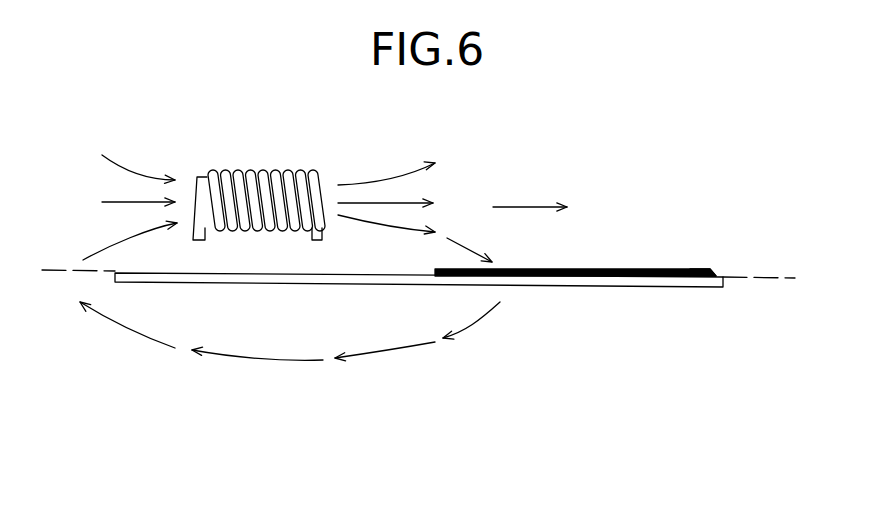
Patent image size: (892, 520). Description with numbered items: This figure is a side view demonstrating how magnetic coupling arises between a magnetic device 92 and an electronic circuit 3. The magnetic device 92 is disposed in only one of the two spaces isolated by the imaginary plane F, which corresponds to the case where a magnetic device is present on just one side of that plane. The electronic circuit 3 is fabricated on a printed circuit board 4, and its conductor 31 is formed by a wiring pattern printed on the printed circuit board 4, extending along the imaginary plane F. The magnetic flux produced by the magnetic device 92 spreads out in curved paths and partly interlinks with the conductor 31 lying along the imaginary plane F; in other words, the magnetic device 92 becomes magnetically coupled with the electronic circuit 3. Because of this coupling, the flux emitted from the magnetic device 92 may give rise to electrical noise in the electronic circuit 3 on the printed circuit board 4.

The magnetic device 92 is at (288, 180).
The printed circuit board 4 is at (573, 284).
The electronic circuit 3 is at (640, 257).
The conductor 31 is at (688, 272).
The imaginary plane F is at (742, 280).